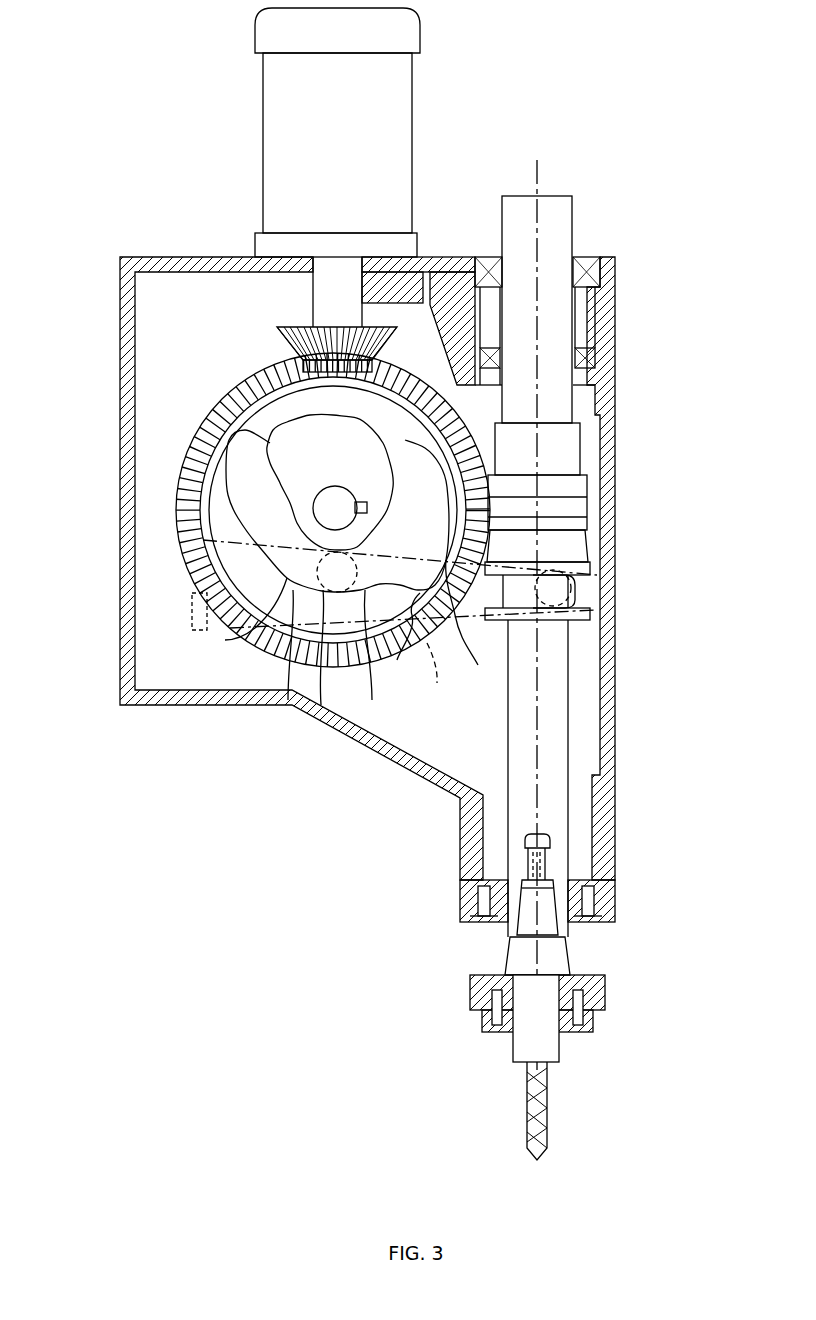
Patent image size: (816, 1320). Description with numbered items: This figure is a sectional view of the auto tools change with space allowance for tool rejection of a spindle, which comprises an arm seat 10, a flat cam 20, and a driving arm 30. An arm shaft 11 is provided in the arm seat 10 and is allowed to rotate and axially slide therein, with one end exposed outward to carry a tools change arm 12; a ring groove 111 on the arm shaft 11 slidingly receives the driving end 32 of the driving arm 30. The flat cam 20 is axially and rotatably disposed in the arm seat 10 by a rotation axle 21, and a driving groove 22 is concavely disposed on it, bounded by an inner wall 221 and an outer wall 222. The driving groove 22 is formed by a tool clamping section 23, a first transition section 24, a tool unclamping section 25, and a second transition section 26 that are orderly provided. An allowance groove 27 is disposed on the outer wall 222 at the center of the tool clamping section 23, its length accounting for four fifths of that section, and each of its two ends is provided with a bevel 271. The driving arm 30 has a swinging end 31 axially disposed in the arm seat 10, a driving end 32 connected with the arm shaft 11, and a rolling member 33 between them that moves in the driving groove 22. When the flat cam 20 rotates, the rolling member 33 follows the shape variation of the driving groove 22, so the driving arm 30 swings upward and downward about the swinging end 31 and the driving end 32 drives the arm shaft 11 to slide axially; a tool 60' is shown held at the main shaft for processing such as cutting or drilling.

The arm seat 10 is at (165, 258).
The arm shaft 11 is at (547, 698).
The ring groove 111 is at (597, 612).
The tools change arm 12 is at (590, 988).
The flat cam 20 is at (222, 506).
The rotation axle 21 is at (328, 497).
The driving groove 22 is at (298, 404).
The inner wall 221 is at (380, 430).
The outer wall 222 is at (268, 392).
The tool clamping section 23 is at (370, 700).
The first transition section 24 is at (247, 477).
The tool unclamping section 25 is at (392, 405).
The second transition section 26 is at (403, 513).
The allowance groove 27 is at (330, 592).
The bevel 271 is at (397, 660).
The driving arm 30 is at (437, 683).
The swinging end 31 is at (230, 628).
The driving end 32 is at (600, 581).
The rolling member 33 is at (321, 705).
The tool 60' is at (588, 1111).